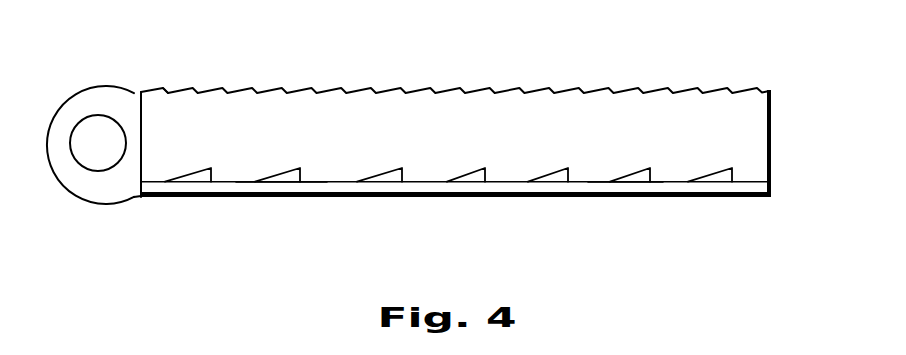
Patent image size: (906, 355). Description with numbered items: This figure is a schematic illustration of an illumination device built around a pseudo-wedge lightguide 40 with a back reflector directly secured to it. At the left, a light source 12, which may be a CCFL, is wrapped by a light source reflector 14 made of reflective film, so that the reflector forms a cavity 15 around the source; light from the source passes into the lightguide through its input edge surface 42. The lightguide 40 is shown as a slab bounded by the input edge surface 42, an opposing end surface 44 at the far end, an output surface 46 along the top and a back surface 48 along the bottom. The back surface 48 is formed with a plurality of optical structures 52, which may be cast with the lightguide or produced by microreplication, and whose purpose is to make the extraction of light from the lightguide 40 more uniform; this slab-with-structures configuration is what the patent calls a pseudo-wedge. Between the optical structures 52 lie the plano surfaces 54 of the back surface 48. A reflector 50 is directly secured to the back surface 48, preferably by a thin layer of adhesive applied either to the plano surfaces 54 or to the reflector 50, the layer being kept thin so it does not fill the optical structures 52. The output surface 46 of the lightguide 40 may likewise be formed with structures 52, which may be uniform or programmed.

The light source 12 is at (100, 116).
The light source reflector 14 is at (68, 97).
The cavity 15 is at (80, 183).
The lightguide 40 is at (477, 141).
The input edge surface 42 is at (140, 165).
The opposing end surface 44 is at (769, 132).
The output surface 46 is at (537, 86).
The back surface 48 is at (505, 184).
The reflector 50 is at (387, 187).
The optical structures 52 is at (197, 168).
The plano surfaces 54 is at (363, 86).